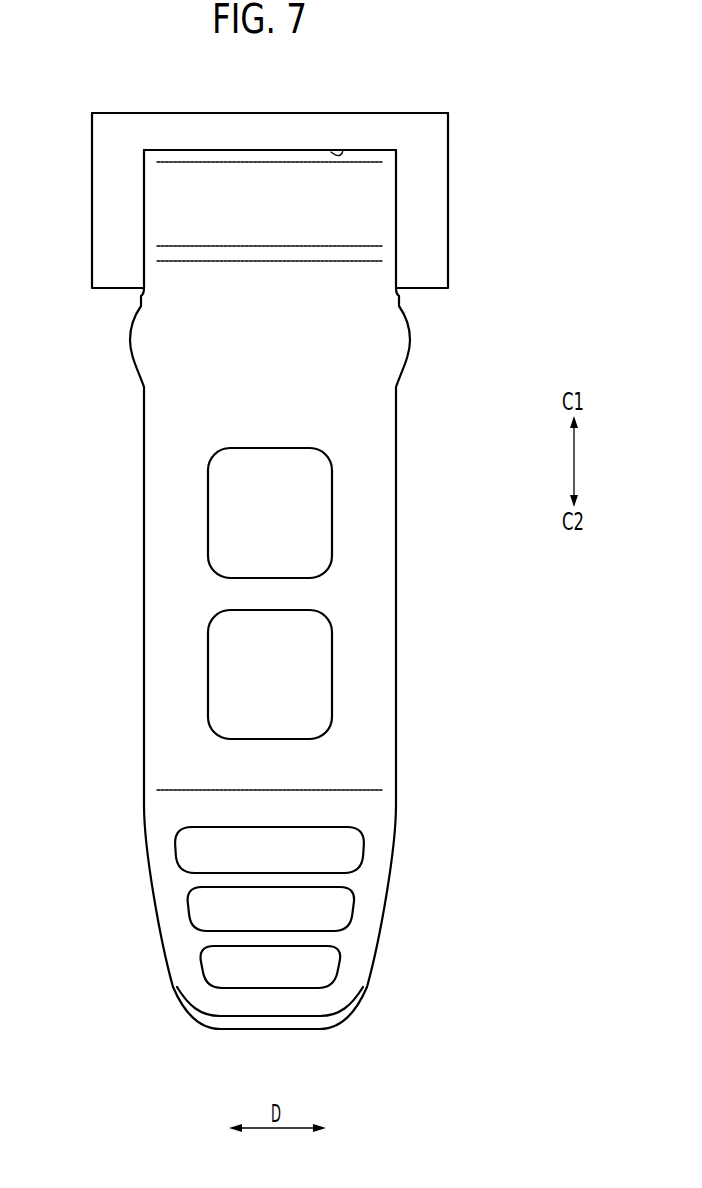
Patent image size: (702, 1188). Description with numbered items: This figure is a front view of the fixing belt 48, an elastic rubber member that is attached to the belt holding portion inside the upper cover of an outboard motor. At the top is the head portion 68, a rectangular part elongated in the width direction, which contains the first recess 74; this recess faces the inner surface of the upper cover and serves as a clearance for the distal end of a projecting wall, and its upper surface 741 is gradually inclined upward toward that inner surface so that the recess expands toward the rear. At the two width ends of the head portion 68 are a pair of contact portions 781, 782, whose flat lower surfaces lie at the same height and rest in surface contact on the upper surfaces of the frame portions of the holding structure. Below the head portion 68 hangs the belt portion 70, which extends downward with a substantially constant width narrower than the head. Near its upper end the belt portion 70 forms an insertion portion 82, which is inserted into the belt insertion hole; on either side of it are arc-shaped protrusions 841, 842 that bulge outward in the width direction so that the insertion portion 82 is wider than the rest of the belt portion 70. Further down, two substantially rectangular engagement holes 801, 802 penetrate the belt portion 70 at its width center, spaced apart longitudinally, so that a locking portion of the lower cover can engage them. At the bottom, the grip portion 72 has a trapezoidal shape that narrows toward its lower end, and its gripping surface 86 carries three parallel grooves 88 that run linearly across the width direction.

The fixing belt 48 is at (281, 176).
The head portion 68 is at (204, 133).
The first recess 74 is at (280, 187).
The upper surface 741 is at (343, 150).
The contact portion 781 is at (427, 257).
The contact portion 782 is at (112, 257).
The insertion portion 82 is at (268, 353).
The protrusion 841 is at (395, 343).
The protrusion 842 is at (142, 343).
The engagement hole 801 is at (233, 512).
The engagement hole 802 is at (233, 669).
The belt portion 70 is at (268, 685).
The gripping surface 86 is at (248, 943).
The grooves 88 is at (227, 967).
The grip portion 72 is at (192, 1017).